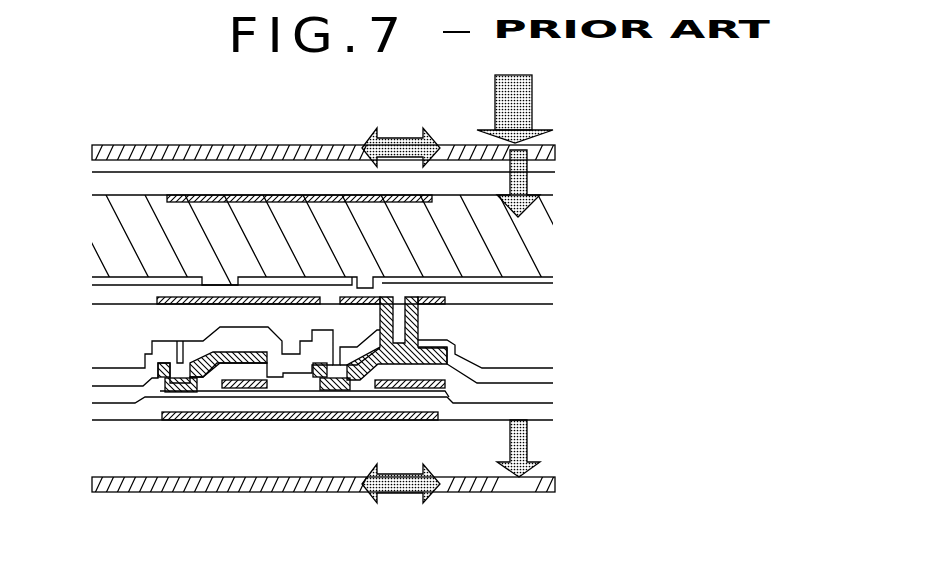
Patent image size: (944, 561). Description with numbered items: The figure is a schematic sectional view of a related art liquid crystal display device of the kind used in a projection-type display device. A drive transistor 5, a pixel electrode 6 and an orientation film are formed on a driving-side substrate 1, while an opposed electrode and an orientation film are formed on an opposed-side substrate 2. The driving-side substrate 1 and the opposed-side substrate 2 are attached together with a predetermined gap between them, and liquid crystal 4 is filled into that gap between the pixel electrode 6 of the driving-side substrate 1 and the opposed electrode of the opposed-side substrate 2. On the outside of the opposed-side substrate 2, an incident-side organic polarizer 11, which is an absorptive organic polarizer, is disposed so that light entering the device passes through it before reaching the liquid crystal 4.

The driving-side substrate 1 is at (77, 287).
The opposed-side substrate 2 is at (77, 162).
The liquid crystal 4 is at (77, 207).
The drive transistor 5 is at (287, 402).
The pixel electrode 6 is at (555, 279).
The incident-side organic polarizer 11 is at (555, 155).